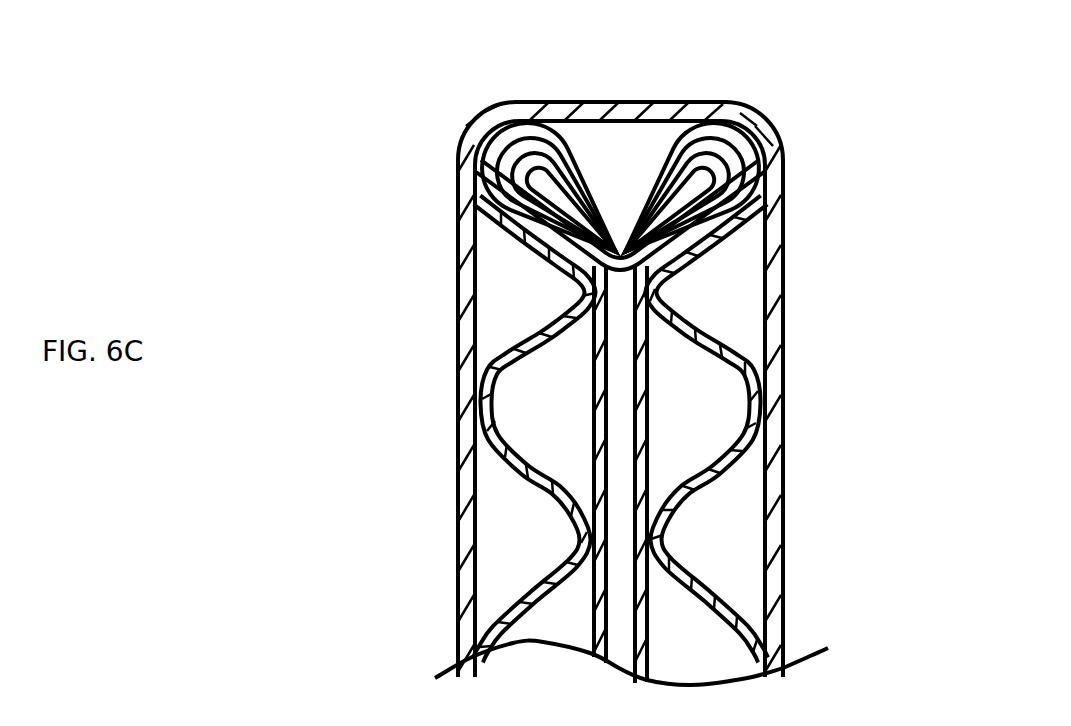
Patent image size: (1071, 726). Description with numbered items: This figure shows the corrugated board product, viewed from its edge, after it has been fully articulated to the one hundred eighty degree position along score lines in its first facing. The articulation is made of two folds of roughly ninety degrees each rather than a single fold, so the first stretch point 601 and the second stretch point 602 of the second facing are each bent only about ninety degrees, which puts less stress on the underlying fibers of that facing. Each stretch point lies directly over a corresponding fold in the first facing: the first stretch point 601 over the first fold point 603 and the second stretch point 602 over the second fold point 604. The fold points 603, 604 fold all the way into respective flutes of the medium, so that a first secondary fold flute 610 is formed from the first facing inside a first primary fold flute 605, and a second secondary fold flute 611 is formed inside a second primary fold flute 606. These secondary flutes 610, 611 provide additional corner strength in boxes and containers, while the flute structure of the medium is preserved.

The first stretch point 601 is at (483, 112).
The second stretch point 602 is at (760, 112).
The first fold point 603 is at (595, 123).
The second fold point 604 is at (665, 118).
The first primary fold flute 605 is at (505, 230).
The second primary fold flute 606 is at (747, 224).
The first secondary fold flute 610 is at (496, 183).
The second secondary fold flute 611 is at (736, 186).